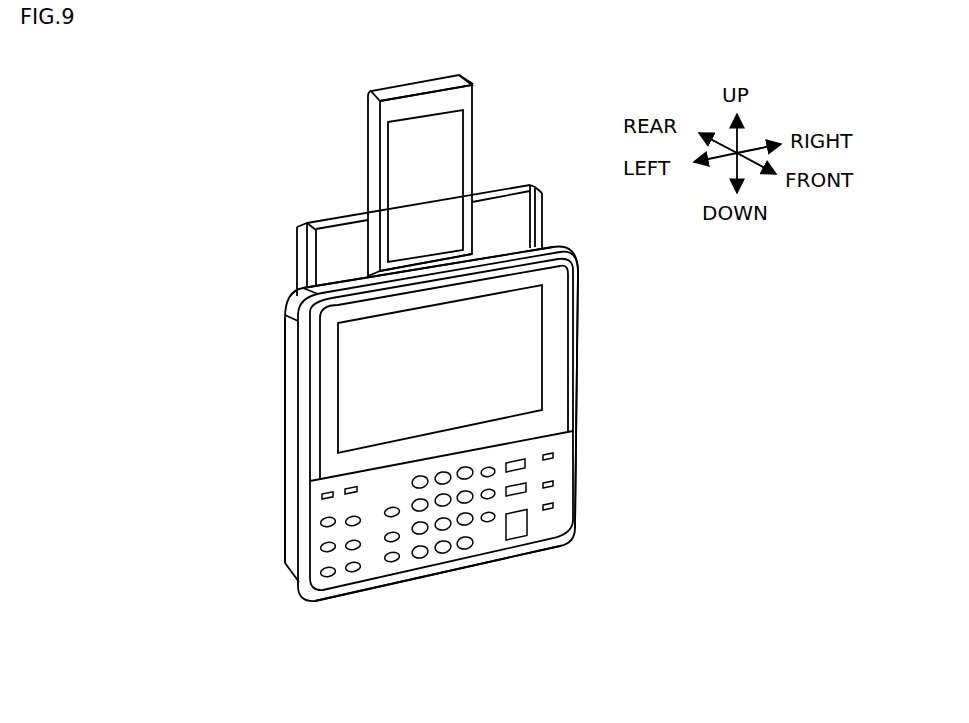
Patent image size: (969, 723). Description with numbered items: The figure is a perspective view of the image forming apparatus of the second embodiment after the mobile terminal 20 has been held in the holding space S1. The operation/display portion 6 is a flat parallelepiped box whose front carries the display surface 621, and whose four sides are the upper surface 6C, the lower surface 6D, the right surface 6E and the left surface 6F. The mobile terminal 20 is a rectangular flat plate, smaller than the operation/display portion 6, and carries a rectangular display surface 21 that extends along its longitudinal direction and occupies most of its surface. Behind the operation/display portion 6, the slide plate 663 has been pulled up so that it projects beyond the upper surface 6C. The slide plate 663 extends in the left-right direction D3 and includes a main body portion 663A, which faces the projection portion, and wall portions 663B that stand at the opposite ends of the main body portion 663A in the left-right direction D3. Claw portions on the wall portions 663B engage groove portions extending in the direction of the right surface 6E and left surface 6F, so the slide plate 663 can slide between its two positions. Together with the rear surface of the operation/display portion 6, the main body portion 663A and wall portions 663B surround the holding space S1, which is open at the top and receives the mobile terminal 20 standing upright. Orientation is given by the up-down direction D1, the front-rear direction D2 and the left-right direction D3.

The operation/display portion 6 is at (276, 292).
The upper surface 6C is at (350, 283).
The lower surface 6D is at (433, 580).
The right surface 6E is at (577, 391).
The left surface 6F is at (292, 441).
The display surface 621 is at (512, 336).
The mobile terminal 20 is at (371, 78).
The display surface 21 is at (433, 140).
The slide plate 663 is at (428, 218).
The main body portion 663A is at (343, 219).
The wall portions 663B is at (303, 245).
The holding space S1 is at (483, 243).
The up-down direction D1 is at (733, 133).
The front-rear direction D2 is at (757, 168).
The left-right direction D3 is at (757, 145).